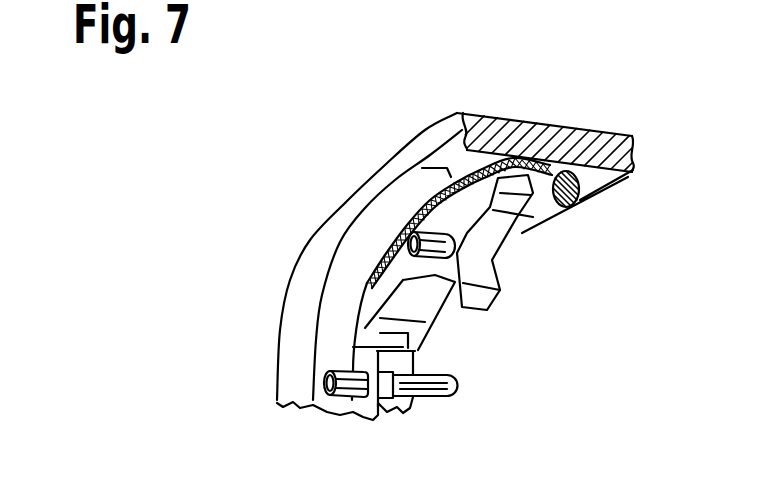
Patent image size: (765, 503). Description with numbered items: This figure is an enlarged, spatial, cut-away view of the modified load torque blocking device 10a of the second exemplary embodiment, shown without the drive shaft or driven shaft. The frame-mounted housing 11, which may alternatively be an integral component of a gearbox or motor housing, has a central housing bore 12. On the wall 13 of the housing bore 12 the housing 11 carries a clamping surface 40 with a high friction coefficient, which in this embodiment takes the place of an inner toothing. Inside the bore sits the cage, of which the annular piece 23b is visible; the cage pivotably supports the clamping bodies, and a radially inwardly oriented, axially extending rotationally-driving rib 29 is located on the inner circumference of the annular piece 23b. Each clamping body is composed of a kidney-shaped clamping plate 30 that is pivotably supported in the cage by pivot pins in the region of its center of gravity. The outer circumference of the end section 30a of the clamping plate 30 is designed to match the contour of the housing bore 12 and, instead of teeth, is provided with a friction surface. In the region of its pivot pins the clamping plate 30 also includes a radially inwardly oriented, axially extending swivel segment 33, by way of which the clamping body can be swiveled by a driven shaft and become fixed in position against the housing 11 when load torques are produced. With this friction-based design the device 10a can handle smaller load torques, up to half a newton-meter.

The load torque blocking device 10a is at (328, 118).
The housing 11 is at (613, 140).
The housing bore 12 is at (350, 233).
The wall 13 is at (422, 167).
The annular piece 23b is at (580, 203).
The rotationally-driving rib 29 is at (437, 398).
The clamping plate 30 is at (393, 280).
The end section 30a is at (372, 310).
The swivel segment 33 is at (500, 287).
The clamping surface 40 is at (517, 160).